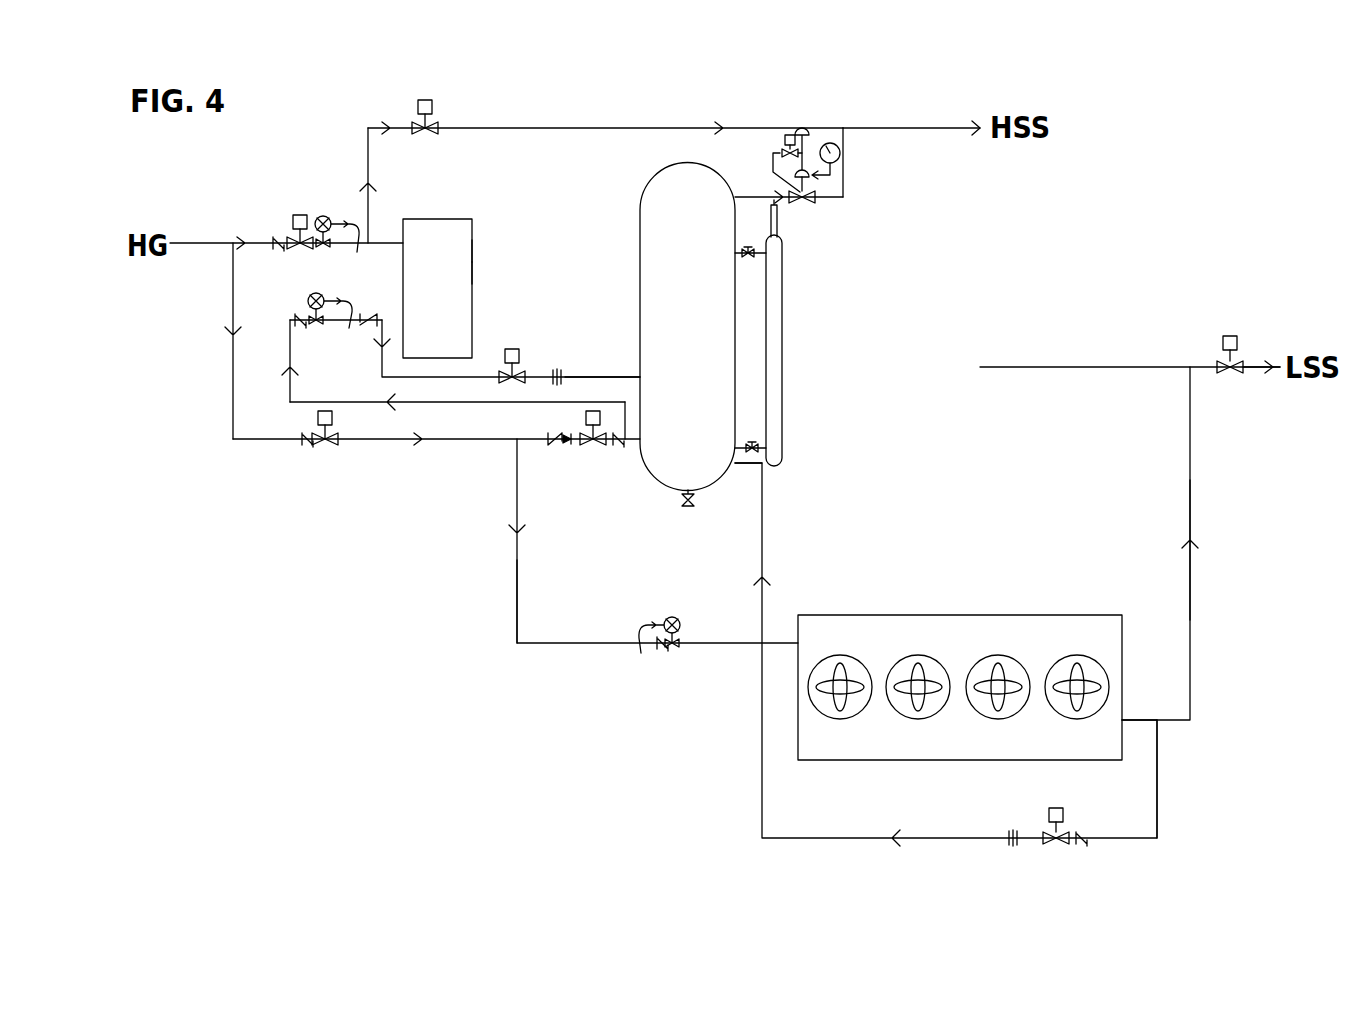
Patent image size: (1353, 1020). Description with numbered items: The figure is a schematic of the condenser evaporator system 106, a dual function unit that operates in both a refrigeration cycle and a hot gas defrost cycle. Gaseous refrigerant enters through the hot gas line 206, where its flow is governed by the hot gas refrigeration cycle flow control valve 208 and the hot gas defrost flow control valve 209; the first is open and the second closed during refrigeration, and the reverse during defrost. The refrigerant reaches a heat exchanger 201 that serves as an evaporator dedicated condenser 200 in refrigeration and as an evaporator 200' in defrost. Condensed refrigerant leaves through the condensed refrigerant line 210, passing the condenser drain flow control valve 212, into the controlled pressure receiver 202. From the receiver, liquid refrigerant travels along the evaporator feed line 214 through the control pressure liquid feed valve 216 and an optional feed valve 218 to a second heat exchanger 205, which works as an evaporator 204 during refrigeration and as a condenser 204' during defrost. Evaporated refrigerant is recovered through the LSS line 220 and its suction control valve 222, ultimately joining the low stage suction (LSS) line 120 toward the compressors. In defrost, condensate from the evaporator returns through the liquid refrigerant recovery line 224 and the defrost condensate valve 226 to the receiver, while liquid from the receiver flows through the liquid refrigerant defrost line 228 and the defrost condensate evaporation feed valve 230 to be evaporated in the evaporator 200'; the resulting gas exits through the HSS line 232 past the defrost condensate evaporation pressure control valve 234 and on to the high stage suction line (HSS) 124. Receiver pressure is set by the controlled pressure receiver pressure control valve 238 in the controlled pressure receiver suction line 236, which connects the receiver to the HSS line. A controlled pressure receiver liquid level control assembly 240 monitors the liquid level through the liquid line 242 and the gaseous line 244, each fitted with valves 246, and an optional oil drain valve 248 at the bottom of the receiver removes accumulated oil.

The condenser evaporator system 106 is at (1199, 188).
The low stage suction (LSS) line 120 is at (1253, 372).
The high stage suction (HSS) line 124 is at (942, 125).
The condenser 200 is at (502, 240).
The evaporator 200' is at (507, 262).
The heat exchanger 201 is at (440, 217).
The controlled pressure receiver 202 is at (650, 180).
The evaporator 204 is at (879, 634).
The condenser 204' is at (1034, 633).
The heat exchanger 205 is at (1056, 615).
The hot gas line 206 is at (202, 240).
The hot gas refrigeration cycle flow control valve 208 is at (293, 240).
The hot gas defrost flow control valve 209 is at (337, 447).
The condensed refrigerant line 210 is at (602, 375).
The condenser drain flow control valve 212 is at (507, 372).
The evaporator feed line 214 is at (517, 598).
The control pressure liquid feed valve 216 is at (603, 443).
The feed valve 218 is at (677, 647).
The LSS line 220 is at (1190, 472).
The suction control valve 222 is at (1242, 362).
The liquid refrigerant recovery line 224 is at (1157, 803).
The defrost condensate valve 226 is at (1065, 843).
The liquid refrigerant defrost line 228 is at (445, 403).
The defrost condensate evaporation feed valve 230 is at (313, 320).
The HSS line 232 is at (498, 125).
The defrost condensate evaporation pressure control valve 234 is at (433, 126).
The controlled pressure receiver suction line 236 is at (843, 180).
The controlled pressure receiver pressure control valve 238 is at (813, 198).
The controlled pressure receiver liquid level control assembly 240 is at (782, 327).
The liquid line 242 is at (765, 445).
The gaseous line 244 is at (743, 250).
The valves 246 is at (752, 256).
The oil drain valve 248 is at (686, 508).